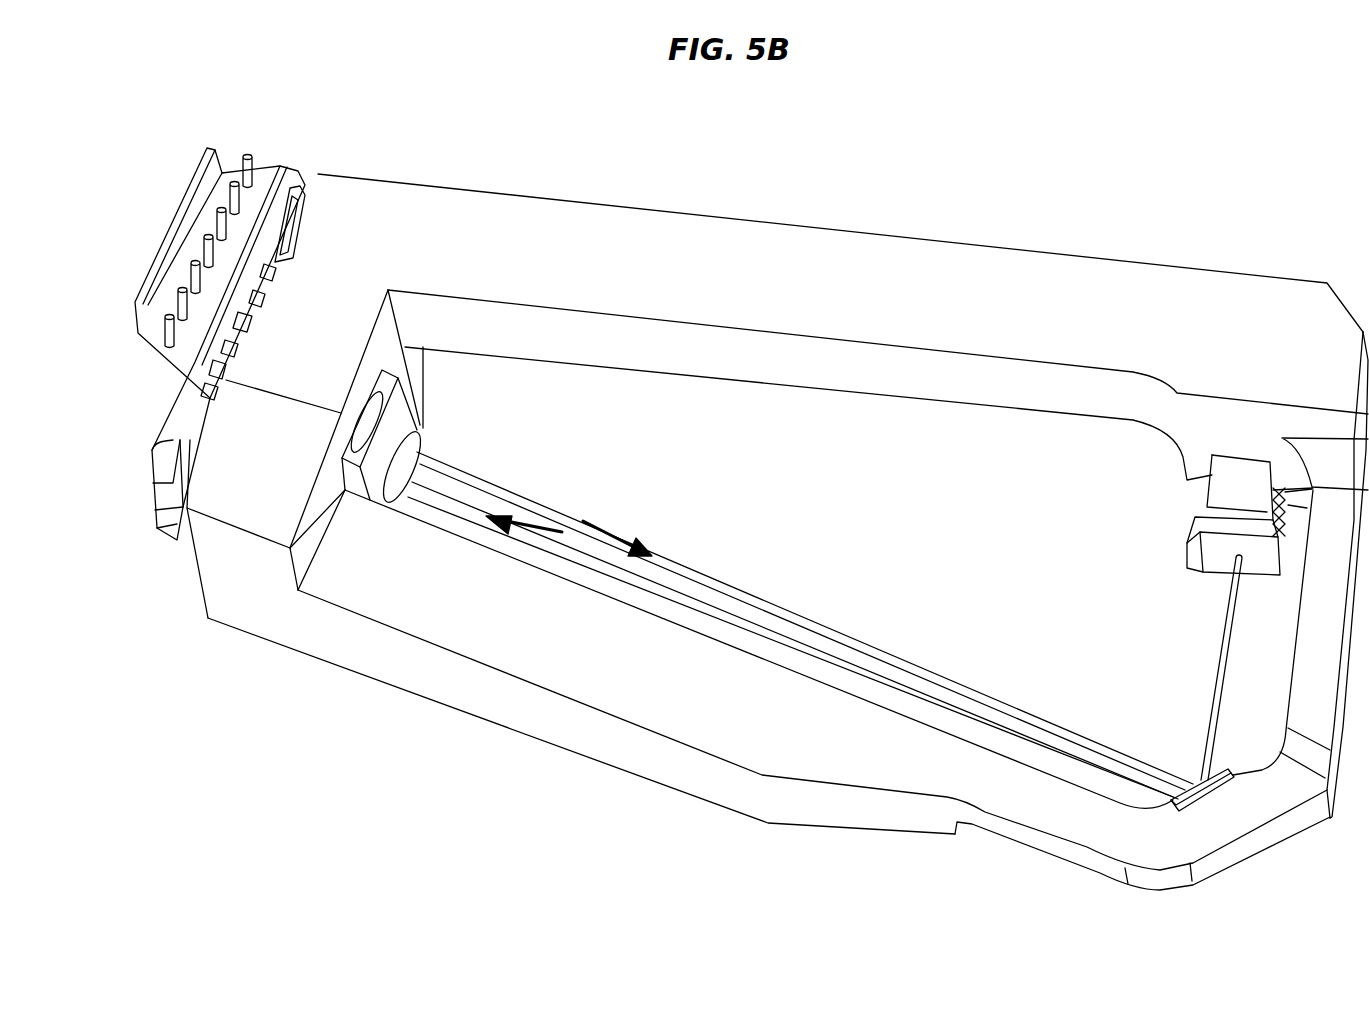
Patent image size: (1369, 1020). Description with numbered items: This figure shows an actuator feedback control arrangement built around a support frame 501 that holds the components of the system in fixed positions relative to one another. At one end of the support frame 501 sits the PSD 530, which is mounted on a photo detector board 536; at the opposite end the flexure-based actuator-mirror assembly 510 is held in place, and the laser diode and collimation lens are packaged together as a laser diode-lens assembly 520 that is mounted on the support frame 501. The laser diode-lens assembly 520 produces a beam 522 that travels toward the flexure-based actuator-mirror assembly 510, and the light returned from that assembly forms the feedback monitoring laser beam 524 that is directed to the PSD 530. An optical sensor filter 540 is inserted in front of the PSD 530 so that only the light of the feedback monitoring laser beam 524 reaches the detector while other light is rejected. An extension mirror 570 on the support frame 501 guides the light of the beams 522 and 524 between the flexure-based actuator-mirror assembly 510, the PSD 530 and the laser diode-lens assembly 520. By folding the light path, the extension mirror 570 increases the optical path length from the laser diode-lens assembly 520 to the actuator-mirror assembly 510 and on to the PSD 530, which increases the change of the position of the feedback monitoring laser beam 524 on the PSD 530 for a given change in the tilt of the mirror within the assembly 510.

The support frame 501 is at (598, 217).
The flexure-based actuator-mirror assembly 510 is at (1184, 510).
The laser diode-lens assembly 520 is at (445, 456).
The beam 522 is at (654, 554).
The feedback monitoring laser beam 524 is at (590, 567).
The PSD 530 is at (147, 497).
The photo detector board 536 is at (160, 535).
The optical sensor filter 540 is at (366, 498).
The extension mirror 570 is at (1197, 787).